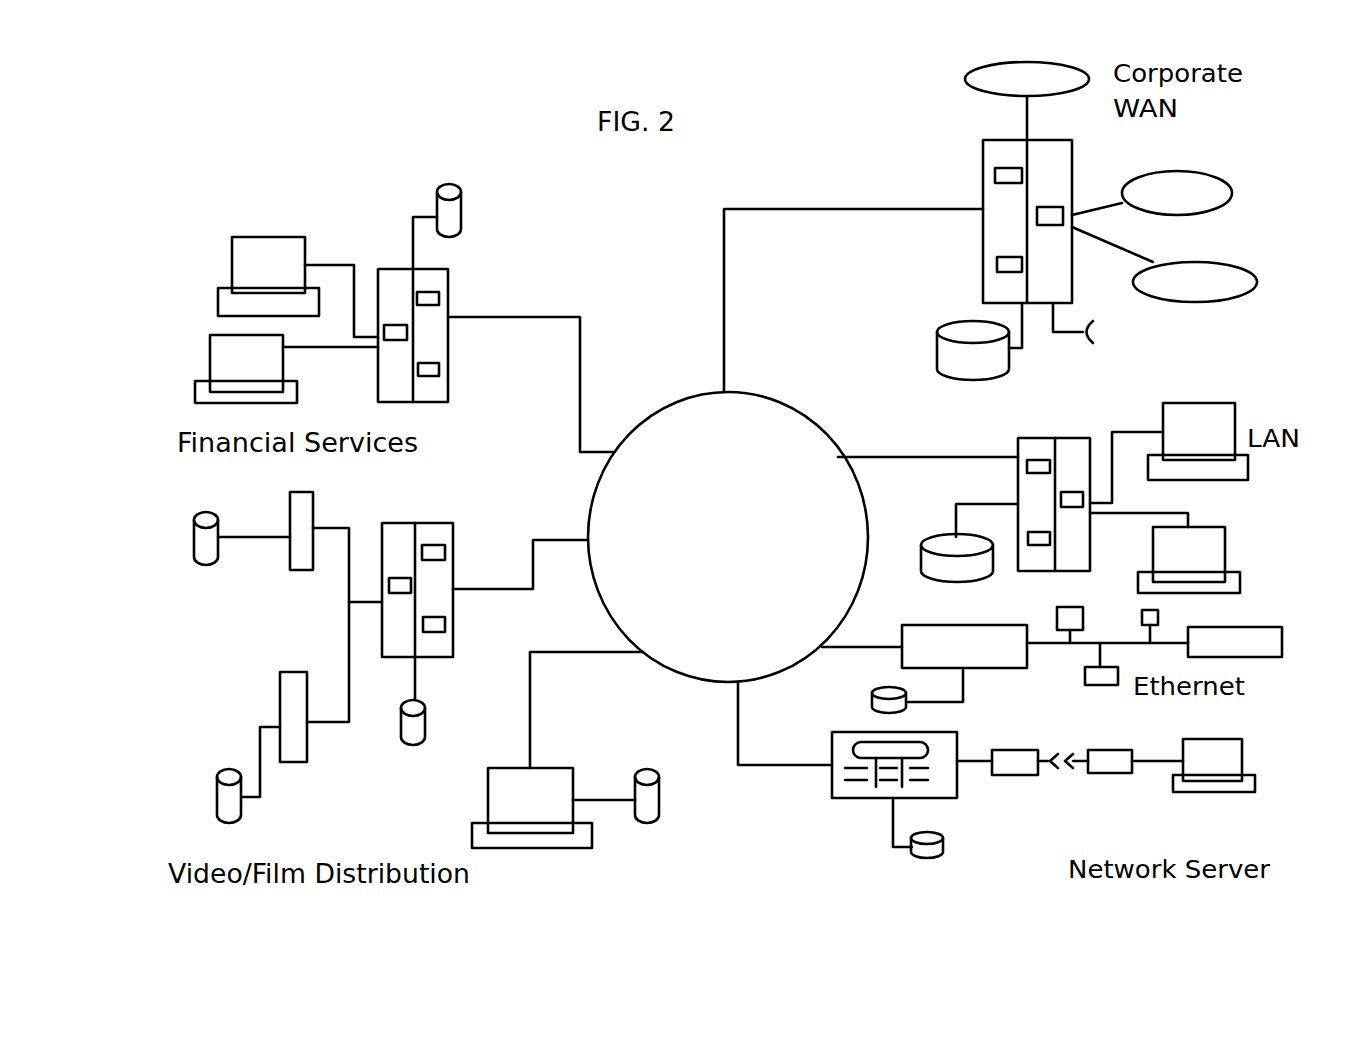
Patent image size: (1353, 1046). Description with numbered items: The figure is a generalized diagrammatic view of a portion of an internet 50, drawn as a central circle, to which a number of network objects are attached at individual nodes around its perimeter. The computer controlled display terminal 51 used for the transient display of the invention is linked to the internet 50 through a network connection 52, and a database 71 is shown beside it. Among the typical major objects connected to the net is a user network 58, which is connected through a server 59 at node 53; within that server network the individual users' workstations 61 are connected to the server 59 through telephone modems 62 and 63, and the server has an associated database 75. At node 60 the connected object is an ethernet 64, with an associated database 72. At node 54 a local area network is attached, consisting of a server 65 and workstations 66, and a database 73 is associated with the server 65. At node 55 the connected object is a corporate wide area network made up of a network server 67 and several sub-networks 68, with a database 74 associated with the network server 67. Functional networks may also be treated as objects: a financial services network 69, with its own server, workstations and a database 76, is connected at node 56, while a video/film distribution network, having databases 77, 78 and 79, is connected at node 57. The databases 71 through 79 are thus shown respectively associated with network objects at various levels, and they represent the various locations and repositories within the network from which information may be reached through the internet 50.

The internet 50 is at (677, 442).
The computer controlled display terminal 51 is at (542, 850).
The connection 52 is at (532, 733).
The node 53 is at (738, 683).
The node 54 is at (838, 457).
The node 55 is at (724, 392).
The node 56 is at (614, 452).
The node 57 is at (588, 540).
The user network 58 is at (1015, 777).
The server 59 is at (832, 800).
The node 60 is at (822, 647).
The workstation 61 is at (1218, 736).
The telephone modem 62 is at (1103, 768).
The telephone modem 63 is at (1013, 762).
The ethernet 64 is at (947, 643).
The server 65 is at (1033, 448).
The workstations 66 is at (1220, 390).
The network server 67 is at (1000, 155).
The sub-networks 68 is at (1007, 82).
The financial services network 69 is at (357, 240).
The database 71 is at (659, 795).
The database 72 is at (872, 700).
The database 73 is at (938, 567).
The database 74 is at (985, 372).
The database 75 is at (943, 850).
The database 76 is at (462, 203).
The database 77 is at (407, 745).
The database 78 is at (225, 800).
The database 79 is at (208, 552).